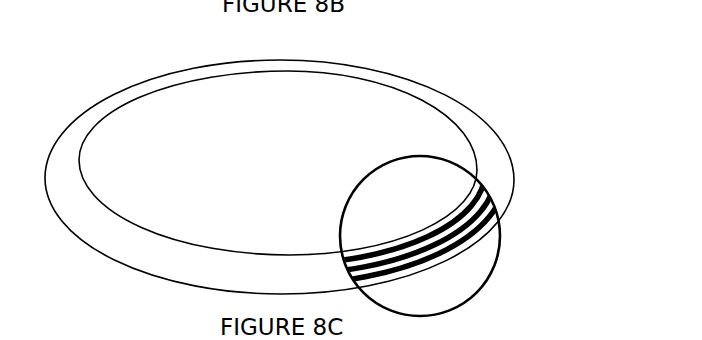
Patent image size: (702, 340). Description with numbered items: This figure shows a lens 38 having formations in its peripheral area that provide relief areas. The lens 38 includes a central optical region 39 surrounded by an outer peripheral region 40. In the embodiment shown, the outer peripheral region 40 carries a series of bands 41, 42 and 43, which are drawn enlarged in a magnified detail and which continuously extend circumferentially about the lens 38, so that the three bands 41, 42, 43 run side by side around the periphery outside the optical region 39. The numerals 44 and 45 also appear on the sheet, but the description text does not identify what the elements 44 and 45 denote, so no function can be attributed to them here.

The lens 38 is at (438, 73).
The optical region 39 is at (142, 124).
The outer peripheral region 40 is at (484, 137).
The band 41 is at (490, 192).
The band 42 is at (490, 224).
The band 43 is at (482, 240).
The element 44 is at (542, 332).
The element 45 is at (143, 330).